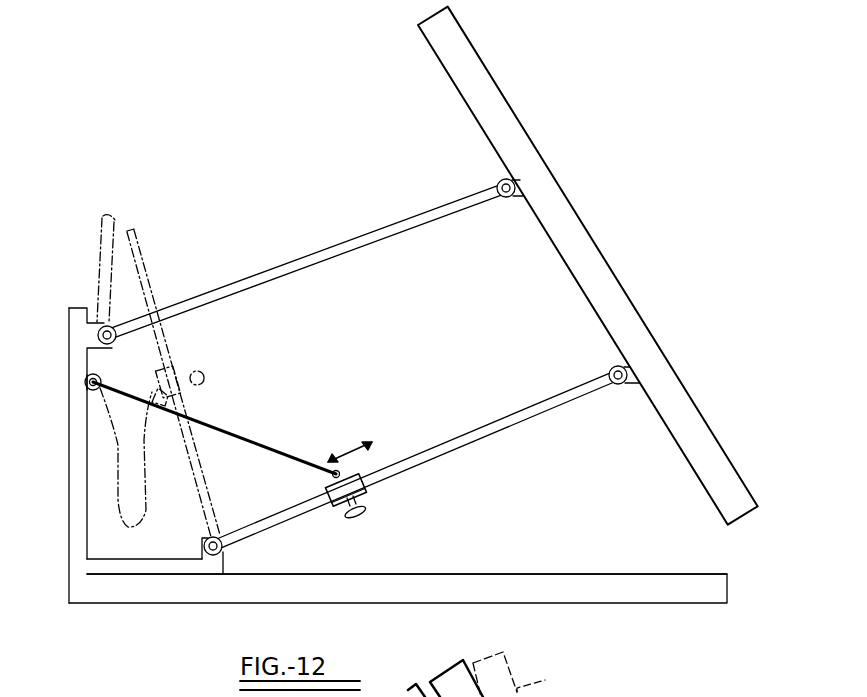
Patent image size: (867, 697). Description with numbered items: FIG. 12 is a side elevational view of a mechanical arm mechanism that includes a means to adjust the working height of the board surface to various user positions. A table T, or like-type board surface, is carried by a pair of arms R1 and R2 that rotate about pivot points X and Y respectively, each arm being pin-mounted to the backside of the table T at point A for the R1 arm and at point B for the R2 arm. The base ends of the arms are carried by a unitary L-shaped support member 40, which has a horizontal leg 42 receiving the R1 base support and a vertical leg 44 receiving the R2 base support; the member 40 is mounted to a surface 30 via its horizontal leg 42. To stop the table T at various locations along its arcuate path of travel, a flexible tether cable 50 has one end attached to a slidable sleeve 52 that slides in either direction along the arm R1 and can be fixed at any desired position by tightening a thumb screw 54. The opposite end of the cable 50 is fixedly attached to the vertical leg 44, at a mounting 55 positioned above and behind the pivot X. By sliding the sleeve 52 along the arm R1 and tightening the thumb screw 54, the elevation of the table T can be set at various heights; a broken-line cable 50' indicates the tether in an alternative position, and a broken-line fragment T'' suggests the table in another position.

The table T is at (588, 266).
The R2 arm R2 is at (345, 238).
The R1 arm R1 is at (517, 405).
The point A is at (620, 384).
The point B is at (507, 197).
The pivot point X is at (221, 537).
The pivot point Y is at (99, 328).
The surface 30 is at (543, 574).
The L-shaped support member 40 is at (148, 585).
The horizontal leg 42 is at (188, 566).
The vertical leg 44 is at (68, 458).
The flexible tether cable 50 is at (214, 428).
The strut in alternate position 50' is at (121, 376).
The slidable sleeve 52 is at (367, 495).
The thumb screw 54 is at (360, 522).
The strut pivot 55 is at (86, 381).
The tray platform in alternate position T'' is at (549, 676).